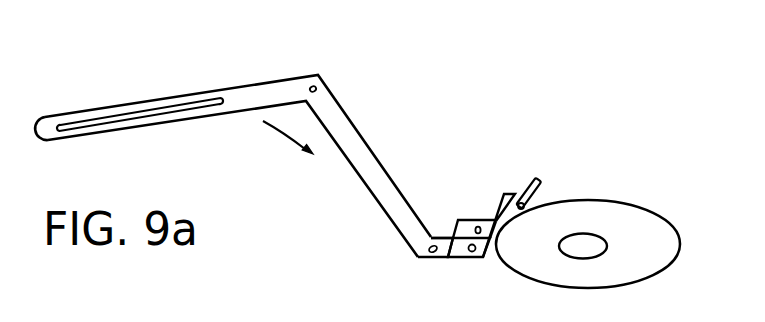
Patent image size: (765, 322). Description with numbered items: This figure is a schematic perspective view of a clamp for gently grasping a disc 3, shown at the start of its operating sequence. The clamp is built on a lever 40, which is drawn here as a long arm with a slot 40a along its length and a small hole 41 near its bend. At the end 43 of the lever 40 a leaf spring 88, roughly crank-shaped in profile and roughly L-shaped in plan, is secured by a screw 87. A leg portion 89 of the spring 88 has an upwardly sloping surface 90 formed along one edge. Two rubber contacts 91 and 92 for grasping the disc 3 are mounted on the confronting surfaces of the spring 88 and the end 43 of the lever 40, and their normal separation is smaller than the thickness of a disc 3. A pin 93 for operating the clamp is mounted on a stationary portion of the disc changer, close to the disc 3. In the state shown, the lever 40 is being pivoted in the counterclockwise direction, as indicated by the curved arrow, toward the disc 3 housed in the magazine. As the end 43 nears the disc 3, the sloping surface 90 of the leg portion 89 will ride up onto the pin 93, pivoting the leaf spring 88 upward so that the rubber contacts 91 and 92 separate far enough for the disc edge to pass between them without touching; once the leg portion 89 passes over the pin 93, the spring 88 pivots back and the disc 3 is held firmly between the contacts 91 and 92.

The disc 3 is at (642, 241).
The lever 40 is at (358, 150).
The slot 40a is at (118, 106).
The pivot hole 41 is at (318, 76).
The end of the lever 43 is at (430, 259).
The screw 87 is at (434, 238).
The leaf spring 88 is at (460, 220).
The leg portion 89 is at (503, 193).
The sloping surface 90 is at (514, 195).
The rubber contact 91 is at (448, 259).
The rubber contact 92 is at (470, 259).
The pin 93 is at (540, 183).